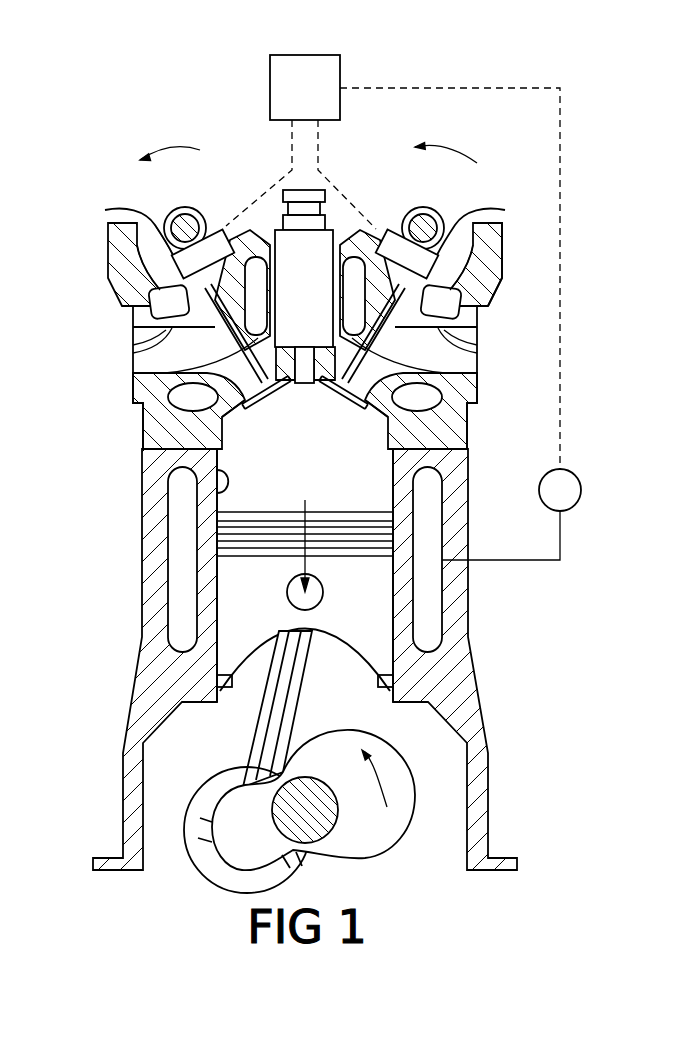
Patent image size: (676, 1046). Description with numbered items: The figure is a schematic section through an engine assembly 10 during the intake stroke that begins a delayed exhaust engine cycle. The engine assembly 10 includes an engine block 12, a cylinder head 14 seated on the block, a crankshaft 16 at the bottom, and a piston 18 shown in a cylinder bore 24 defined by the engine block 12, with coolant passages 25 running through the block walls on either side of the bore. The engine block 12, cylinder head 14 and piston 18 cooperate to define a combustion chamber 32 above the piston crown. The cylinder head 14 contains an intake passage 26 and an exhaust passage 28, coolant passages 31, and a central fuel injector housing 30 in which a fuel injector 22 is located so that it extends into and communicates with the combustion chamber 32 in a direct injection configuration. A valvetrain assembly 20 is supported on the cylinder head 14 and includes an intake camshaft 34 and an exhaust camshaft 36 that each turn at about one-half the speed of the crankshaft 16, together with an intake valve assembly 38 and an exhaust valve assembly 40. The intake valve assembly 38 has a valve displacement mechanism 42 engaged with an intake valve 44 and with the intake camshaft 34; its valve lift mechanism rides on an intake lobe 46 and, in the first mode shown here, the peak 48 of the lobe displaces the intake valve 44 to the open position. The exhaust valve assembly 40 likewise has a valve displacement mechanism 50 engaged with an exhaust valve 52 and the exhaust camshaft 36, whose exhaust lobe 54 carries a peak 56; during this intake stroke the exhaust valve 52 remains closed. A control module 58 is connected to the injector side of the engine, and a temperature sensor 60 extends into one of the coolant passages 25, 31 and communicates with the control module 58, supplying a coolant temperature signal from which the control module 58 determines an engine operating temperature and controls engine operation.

The engine assembly 10 is at (132, 168).
The engine block 12 is at (460, 525).
The cylinder head 14 is at (118, 248).
The crankshaft 16 is at (340, 853).
The piston 18 is at (383, 600).
The valvetrain assembly 20 is at (453, 195).
The fuel injector 22 is at (318, 302).
The cylinder bore 24 is at (217, 493).
The coolant passages 25 is at (176, 603).
The intake passage 26 is at (470, 332).
The exhaust passage 28 is at (133, 350).
The fuel injector housing 30 is at (320, 250).
The coolant passages 31 is at (242, 292).
The combustion chamber 32 is at (245, 410).
The intake camshaft 34 is at (417, 203).
The exhaust camshaft 36 is at (197, 193).
The intake valve assembly 38 is at (378, 230).
The exhaust valve assembly 40 is at (223, 227).
The valve displacement mechanism 42 is at (470, 241).
The intake valve 44 is at (344, 400).
The intake lobe 46 is at (437, 215).
The peak 48 is at (460, 285).
The valve displacement mechanism 50 is at (165, 225).
The exhaust valve 52 is at (253, 403).
The exhaust lobe 54 is at (167, 213).
The peak 56 is at (207, 207).
The control module 58 is at (318, 99).
The temperature sensor 60 is at (581, 490).